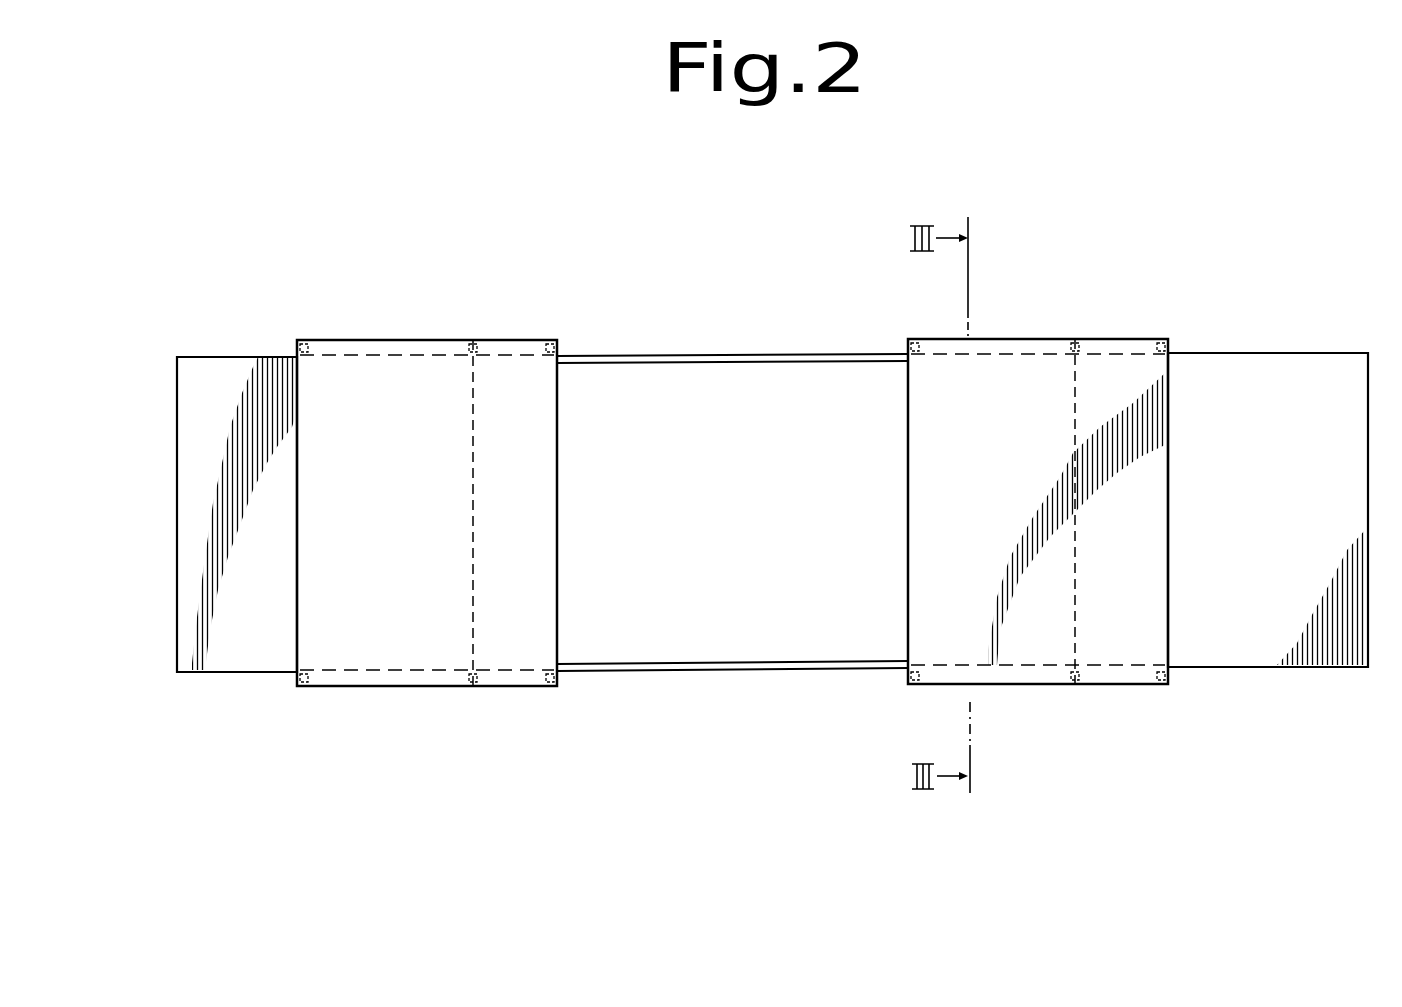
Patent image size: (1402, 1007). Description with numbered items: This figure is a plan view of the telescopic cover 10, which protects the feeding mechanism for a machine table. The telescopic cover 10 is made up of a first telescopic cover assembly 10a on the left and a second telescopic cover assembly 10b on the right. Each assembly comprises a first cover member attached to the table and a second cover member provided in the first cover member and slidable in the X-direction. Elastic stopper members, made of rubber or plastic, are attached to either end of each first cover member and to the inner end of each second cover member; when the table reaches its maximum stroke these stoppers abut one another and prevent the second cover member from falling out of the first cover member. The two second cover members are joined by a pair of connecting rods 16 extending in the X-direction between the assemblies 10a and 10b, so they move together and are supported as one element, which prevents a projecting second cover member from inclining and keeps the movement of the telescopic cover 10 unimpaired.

The telescopic cover 10 is at (785, 232).
The first telescopic cover assembly 10a is at (350, 256).
The second telescopic cover assembly 10b is at (1130, 258).
The connecting rod 16 is at (725, 355).